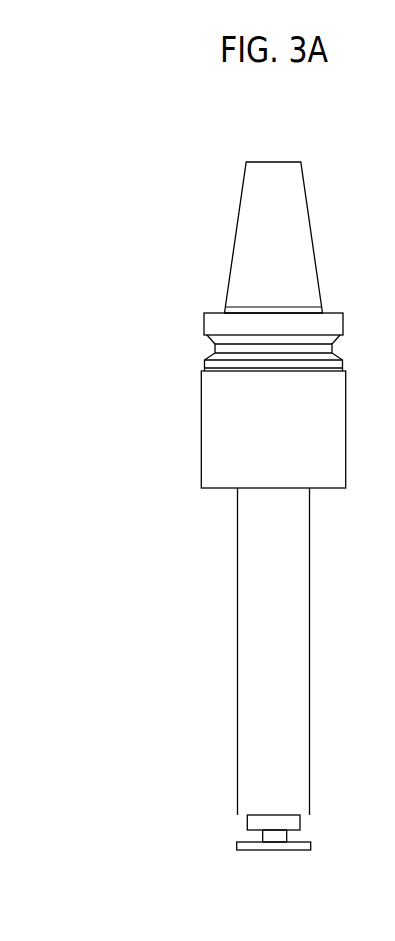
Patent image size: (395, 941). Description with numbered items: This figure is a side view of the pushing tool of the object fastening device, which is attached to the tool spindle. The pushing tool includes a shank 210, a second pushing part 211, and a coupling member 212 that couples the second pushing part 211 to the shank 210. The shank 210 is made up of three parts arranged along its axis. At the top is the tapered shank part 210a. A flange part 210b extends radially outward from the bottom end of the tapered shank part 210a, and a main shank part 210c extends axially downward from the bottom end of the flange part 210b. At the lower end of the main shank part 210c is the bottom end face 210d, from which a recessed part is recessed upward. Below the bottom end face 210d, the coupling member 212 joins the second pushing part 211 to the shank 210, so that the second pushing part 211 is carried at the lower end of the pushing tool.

The shank 210 is at (110, 315).
The tapered shank part 210a is at (247, 259).
The flange part 210b is at (212, 409).
The main shank part 210c is at (252, 568).
The bottom end face 210d is at (247, 817).
The second pushing part 211 is at (236, 848).
The coupling member 212 is at (304, 819).